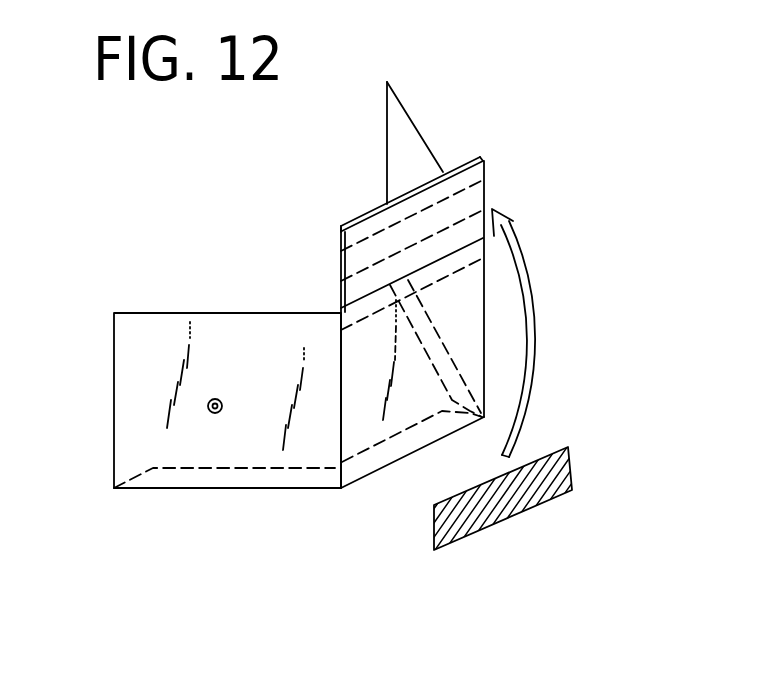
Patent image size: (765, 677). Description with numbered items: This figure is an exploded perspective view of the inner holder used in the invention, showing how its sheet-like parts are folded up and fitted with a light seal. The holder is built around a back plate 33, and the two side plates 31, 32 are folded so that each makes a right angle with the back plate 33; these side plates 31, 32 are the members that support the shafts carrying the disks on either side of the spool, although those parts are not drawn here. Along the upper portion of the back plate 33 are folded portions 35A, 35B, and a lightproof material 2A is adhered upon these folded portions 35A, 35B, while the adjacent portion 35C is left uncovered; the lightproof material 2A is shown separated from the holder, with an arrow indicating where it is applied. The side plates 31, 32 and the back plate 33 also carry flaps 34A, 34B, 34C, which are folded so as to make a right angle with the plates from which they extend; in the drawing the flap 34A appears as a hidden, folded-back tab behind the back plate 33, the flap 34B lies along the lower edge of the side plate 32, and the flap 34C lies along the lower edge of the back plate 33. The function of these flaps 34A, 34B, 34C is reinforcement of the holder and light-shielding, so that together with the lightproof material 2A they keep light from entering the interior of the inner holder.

The lightproof material 2A is at (547, 498).
The side plate 31 is at (413, 120).
The side plate 32 is at (131, 407).
The back plate 33 is at (365, 435).
The flap 34A is at (422, 352).
The flap 34B is at (222, 469).
The flap 34C is at (393, 452).
The folded portion 35A is at (338, 297).
The folded portion 35B is at (338, 268).
The portion 35C is at (338, 243).